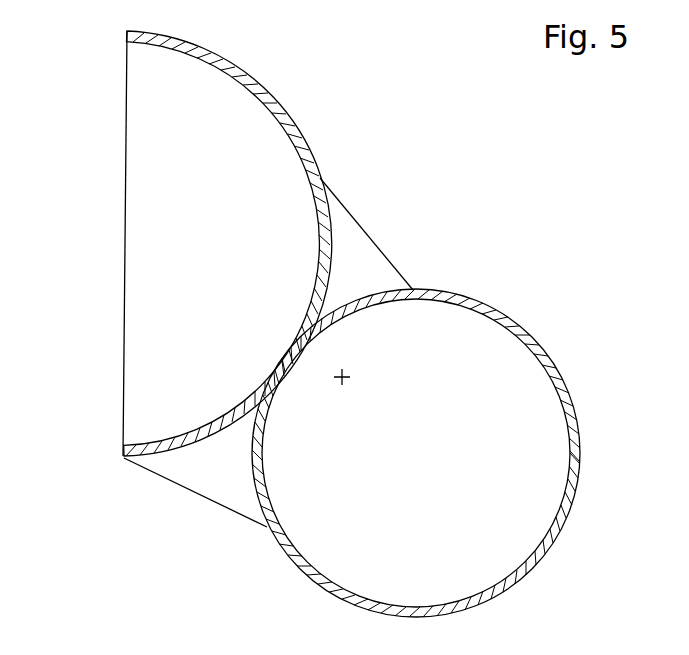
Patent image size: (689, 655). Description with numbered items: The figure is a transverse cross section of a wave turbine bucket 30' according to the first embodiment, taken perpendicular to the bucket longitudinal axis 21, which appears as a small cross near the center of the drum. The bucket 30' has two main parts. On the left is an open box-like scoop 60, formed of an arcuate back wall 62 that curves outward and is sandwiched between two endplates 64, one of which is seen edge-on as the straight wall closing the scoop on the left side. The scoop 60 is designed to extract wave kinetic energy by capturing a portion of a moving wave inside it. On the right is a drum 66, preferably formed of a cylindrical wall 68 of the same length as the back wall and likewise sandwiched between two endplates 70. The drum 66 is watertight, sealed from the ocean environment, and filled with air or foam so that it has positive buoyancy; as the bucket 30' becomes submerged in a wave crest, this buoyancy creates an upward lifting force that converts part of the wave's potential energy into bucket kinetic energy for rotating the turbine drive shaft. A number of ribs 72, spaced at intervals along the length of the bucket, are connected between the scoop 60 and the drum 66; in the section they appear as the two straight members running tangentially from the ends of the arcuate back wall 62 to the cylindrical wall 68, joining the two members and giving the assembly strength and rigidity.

The bucket longitudinal axis 21 is at (345, 380).
The bucket 30' is at (338, 324).
The scoop 60 is at (150, 297).
The arcuate back wall 62 is at (267, 83).
The endplates 64 is at (127, 92).
The drum 66 is at (544, 428).
The cylindrical wall 68 is at (535, 343).
The endplates 70 is at (537, 558).
The ribs 72 is at (358, 218).